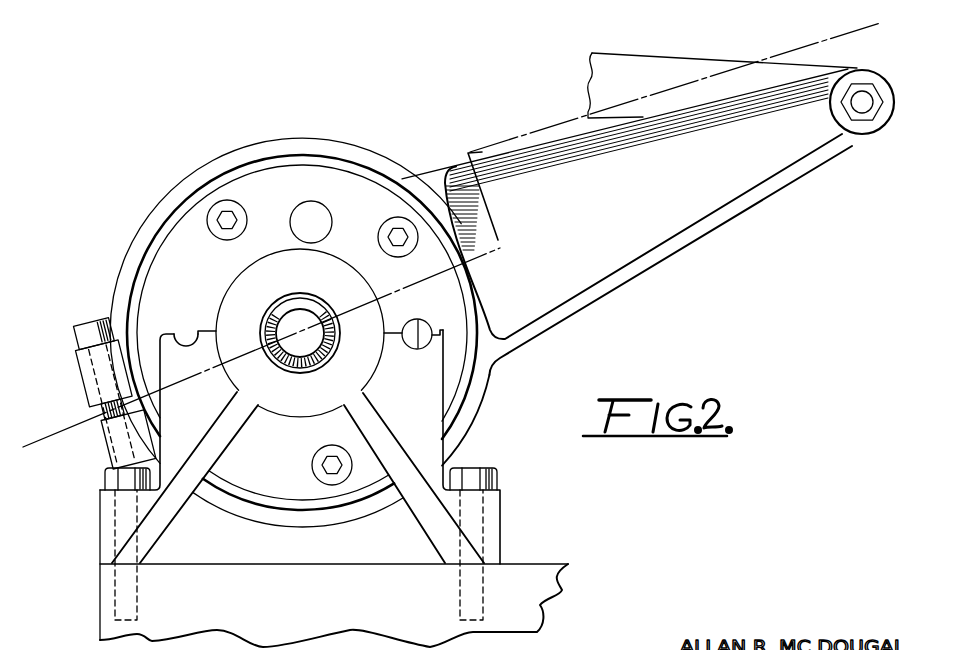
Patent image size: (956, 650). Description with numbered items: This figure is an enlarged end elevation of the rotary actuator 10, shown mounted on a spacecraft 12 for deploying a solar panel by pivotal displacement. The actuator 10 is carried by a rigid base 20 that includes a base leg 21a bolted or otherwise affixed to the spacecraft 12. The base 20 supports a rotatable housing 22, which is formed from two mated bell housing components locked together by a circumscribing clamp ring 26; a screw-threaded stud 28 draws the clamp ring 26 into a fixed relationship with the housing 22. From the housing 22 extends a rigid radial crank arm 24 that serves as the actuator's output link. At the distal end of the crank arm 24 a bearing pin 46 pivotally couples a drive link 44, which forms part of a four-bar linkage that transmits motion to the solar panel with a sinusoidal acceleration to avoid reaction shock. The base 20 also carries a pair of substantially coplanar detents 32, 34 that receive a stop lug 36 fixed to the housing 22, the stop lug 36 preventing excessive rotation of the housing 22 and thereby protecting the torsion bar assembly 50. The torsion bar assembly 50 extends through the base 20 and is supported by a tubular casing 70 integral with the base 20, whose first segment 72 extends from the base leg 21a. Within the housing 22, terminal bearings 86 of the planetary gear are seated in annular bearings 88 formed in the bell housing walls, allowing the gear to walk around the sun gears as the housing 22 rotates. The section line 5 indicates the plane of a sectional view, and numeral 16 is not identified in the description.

The rotary actuator 10 is at (401, 146).
The spacecraft 12 is at (562, 605).
The shaft 16 is at (599, 6).
The rigid base 20 is at (329, 416).
The base leg 21a is at (494, 521).
The rotatable housing 22 is at (273, 163).
The radial crank arm 24 is at (693, 206).
The clamp ring 26 is at (190, 187).
The screw-threaded stud 28 is at (110, 415).
The detent 32 is at (187, 327).
The detent 34 is at (423, 320).
The stop lug 36 is at (416, 319).
The drive link 44 is at (585, 83).
The bearing pin 46 is at (863, 108).
The torsion bar assembly 50 is at (266, 360).
The tubular casing 70 is at (236, 272).
The first segment 72 is at (312, 289).
The terminal bearings 86 is at (302, 217).
The annular bearings 88 is at (323, 212).
The section line 5- 5 is at (32, 446).